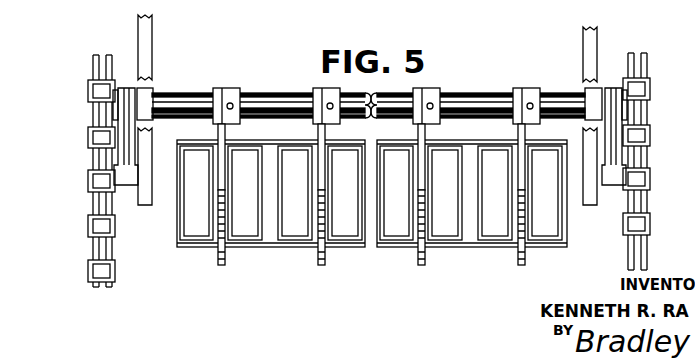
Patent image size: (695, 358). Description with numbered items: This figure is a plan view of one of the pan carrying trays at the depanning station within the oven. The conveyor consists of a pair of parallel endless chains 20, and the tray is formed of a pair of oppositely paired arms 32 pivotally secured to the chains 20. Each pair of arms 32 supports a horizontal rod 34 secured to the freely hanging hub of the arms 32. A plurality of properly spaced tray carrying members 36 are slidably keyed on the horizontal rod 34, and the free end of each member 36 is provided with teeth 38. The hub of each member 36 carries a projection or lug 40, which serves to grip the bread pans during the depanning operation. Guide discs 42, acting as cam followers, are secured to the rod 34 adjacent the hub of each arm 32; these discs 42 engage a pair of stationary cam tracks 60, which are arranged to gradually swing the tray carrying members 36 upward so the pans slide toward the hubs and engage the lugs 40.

The endless chains 20 is at (103, 218).
The arms 32 is at (125, 143).
The horizontal rod 34 is at (275, 97).
The tray carrying members 36 is at (320, 134).
The teeth 38 is at (220, 268).
The lug 40 is at (222, 102).
The guide discs 42 is at (143, 106).
The cam tracks 60 is at (140, 31).